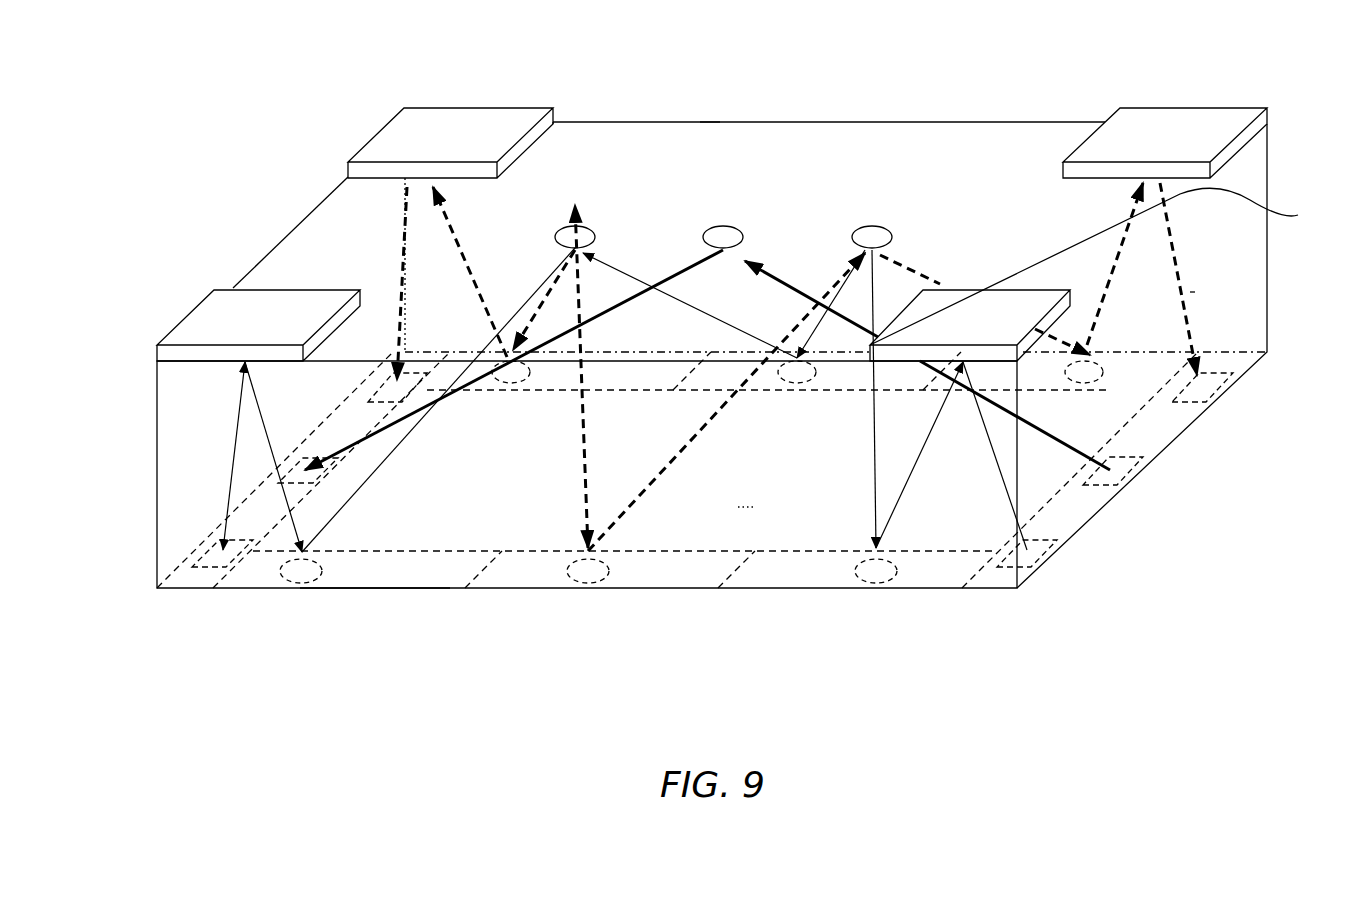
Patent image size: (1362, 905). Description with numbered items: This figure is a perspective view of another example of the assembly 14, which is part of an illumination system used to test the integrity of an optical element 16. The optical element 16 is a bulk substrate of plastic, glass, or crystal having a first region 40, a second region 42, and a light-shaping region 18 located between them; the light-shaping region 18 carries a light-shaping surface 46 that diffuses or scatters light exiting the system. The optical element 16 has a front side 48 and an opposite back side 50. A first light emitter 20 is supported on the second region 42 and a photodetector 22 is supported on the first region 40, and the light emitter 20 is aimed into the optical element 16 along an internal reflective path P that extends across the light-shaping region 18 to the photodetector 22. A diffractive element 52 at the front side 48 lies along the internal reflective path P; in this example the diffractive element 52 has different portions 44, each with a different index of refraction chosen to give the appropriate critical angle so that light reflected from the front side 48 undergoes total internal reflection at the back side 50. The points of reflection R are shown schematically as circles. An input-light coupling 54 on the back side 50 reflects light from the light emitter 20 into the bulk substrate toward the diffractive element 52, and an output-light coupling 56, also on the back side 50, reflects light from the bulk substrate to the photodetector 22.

The assembly 14 is at (860, 52).
The optical element 16 is at (939, 120).
The light-shaping region 18 is at (719, 192).
The first light emitter 20 is at (1233, 382).
The photodetector 22 is at (298, 460).
The first region 40 is at (1104, 266).
The second region 42 is at (320, 225).
The portions 44 is at (558, 395).
The light-shaping surface 46 is at (749, 491).
The front side 48 is at (377, 598).
The back side 50 is at (610, 157).
The diffractive element 52 is at (512, 597).
The input-light coupling 54 is at (1236, 106).
The output-light coupling 56 is at (392, 120).
The points of reflection R is at (596, 232).
The internal reflective path P is at (1190, 292).